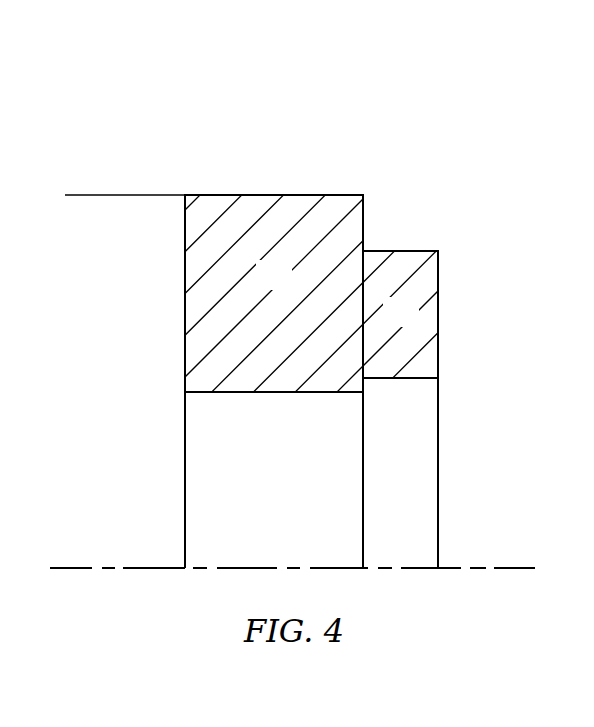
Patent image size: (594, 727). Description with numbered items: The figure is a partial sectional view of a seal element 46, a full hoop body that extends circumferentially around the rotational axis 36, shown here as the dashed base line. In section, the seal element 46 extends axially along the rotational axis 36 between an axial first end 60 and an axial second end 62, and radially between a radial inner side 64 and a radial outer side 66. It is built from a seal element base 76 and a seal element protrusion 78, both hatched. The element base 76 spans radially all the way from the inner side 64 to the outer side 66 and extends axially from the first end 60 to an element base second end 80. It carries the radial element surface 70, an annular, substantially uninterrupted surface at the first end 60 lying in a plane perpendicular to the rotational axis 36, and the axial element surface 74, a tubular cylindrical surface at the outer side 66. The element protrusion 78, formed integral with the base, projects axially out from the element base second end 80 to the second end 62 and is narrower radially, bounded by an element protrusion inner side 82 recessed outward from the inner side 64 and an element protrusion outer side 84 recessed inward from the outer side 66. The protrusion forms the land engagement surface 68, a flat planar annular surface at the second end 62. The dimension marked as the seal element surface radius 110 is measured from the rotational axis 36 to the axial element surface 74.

The rotational axis 36 is at (527, 566).
The seal element 46 is at (490, 127).
The axial first end 60 is at (172, 315).
The axial second end 62 is at (456, 318).
The radial inner side 64 is at (281, 408).
The radial outer side 66 is at (291, 180).
The land engagement surface 68 is at (438, 352).
The radial element surface 70 is at (185, 271).
The axial element surface 74 is at (233, 194).
The seal element base 76 is at (288, 288).
The seal element protrusion 78 is at (415, 325).
The element base second end 80 is at (378, 216).
The element protrusion inner side 82 is at (404, 394).
The element protrusion outer side 84 is at (427, 236).
The seal element surface radius 110 is at (78, 208).